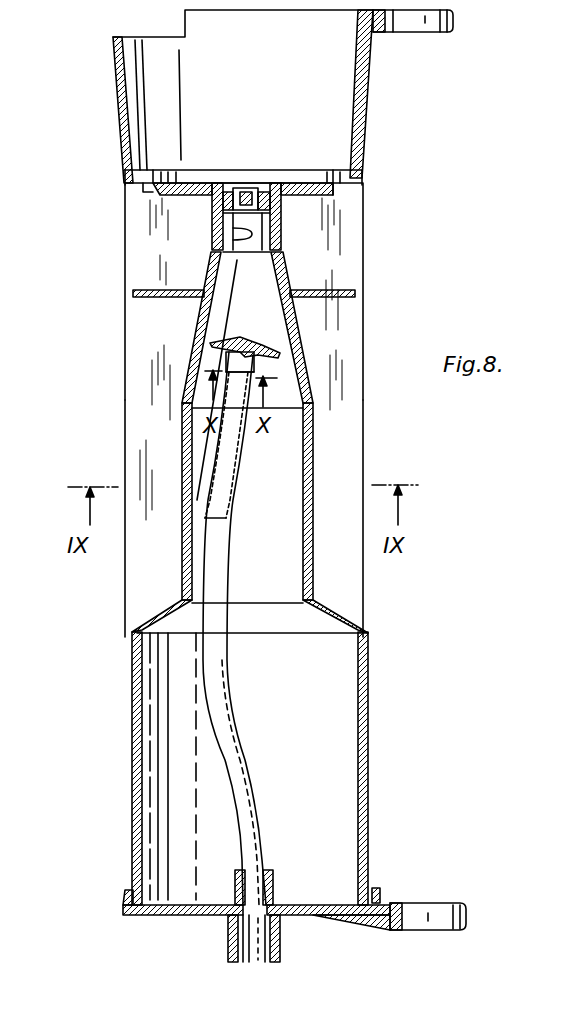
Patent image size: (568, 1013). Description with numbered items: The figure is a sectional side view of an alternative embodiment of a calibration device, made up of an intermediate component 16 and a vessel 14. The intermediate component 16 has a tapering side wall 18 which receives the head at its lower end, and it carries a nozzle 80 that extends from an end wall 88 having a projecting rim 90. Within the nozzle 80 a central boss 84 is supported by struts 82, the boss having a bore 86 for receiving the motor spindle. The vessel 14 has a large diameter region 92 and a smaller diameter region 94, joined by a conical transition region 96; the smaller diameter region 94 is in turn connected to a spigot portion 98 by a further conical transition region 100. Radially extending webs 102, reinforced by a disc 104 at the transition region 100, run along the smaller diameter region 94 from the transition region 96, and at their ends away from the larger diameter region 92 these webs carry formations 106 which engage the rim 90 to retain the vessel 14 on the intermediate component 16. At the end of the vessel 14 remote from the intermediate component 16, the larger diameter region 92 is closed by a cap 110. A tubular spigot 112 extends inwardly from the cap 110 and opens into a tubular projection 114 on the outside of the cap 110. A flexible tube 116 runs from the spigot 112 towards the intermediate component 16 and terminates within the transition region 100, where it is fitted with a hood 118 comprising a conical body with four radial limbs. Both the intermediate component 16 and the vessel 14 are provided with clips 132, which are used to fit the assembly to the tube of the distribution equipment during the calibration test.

The vessel 14 is at (378, 721).
The intermediate component 16 is at (90, 127).
The tapering side wall 18 is at (368, 113).
The nozzle 80 is at (282, 234).
The struts 82 is at (226, 192).
The central boss 84 is at (235, 193).
The bore 86 is at (258, 193).
The end wall 88 is at (282, 199).
The projecting rim 90 is at (147, 192).
The large diameter region 92 is at (372, 827).
The smaller diameter region 94 is at (313, 464).
The conical transition region 96 is at (343, 605).
The spigot portion 98 is at (247, 237).
The further conical transition region 100 is at (228, 326).
The radially extending webs 102 is at (355, 352).
The disc 104 is at (134, 292).
The formations 106 is at (152, 185).
The cap 110 is at (165, 915).
The tubular spigot 112 is at (268, 877).
The tubular projection 114 is at (230, 940).
The flexible tube 116 is at (228, 737).
The hood 118 is at (263, 342).
The clips 132 is at (440, 30).